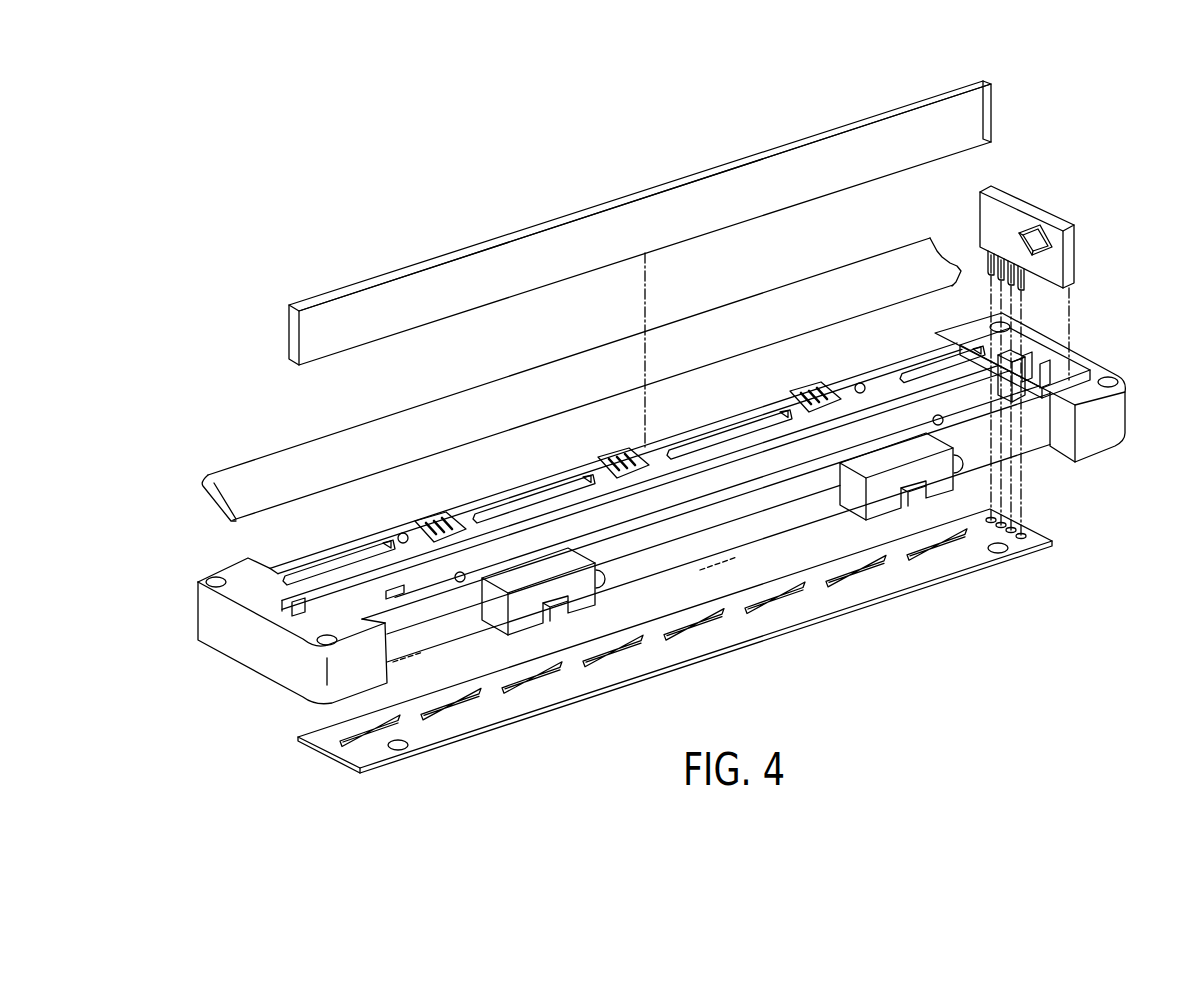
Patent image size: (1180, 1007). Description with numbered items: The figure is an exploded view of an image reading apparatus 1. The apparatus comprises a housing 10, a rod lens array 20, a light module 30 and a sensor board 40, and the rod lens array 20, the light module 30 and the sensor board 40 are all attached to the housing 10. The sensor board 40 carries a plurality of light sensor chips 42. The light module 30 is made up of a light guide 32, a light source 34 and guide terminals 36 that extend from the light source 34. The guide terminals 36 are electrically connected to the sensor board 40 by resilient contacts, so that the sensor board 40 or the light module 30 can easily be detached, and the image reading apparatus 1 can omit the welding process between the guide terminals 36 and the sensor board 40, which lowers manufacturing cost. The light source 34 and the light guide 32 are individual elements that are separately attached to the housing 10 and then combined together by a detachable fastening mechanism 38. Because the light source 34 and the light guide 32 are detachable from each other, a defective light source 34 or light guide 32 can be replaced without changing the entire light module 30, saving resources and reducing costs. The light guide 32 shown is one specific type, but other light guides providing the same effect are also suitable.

The image reading apparatus 1 is at (1121, 129).
The housing 10 is at (232, 640).
The rod lens array 20 is at (345, 304).
The light module 30 is at (970, 203).
The light guide 32 is at (273, 475).
The light source 34 is at (1073, 250).
The guide terminals 36 is at (1023, 280).
The detachable fastening mechanism 38 is at (948, 265).
The sensor board 40 is at (335, 752).
The light sensor chips 42 is at (627, 648).